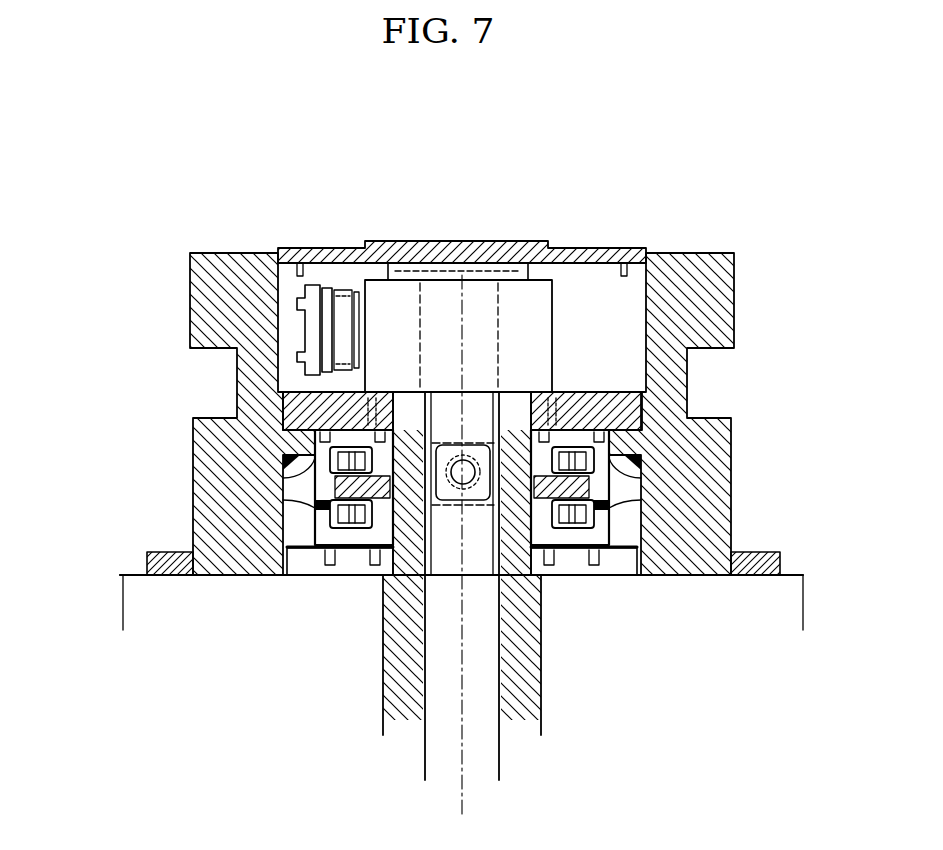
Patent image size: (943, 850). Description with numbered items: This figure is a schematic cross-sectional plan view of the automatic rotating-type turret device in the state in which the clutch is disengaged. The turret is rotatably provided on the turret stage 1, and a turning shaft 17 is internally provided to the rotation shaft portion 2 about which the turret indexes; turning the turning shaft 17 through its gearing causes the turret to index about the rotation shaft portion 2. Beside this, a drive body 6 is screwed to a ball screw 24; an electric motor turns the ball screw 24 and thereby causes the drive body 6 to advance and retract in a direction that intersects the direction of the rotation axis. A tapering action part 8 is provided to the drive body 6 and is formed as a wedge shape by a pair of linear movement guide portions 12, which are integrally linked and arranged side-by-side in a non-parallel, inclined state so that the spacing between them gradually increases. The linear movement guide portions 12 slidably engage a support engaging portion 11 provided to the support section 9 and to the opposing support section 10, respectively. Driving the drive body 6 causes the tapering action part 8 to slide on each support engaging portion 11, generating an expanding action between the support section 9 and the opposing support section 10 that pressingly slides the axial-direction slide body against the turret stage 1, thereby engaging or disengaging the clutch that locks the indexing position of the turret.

The turret stage 1 is at (148, 380).
The rotation shaft portion 2 is at (533, 667).
The drive body 6 is at (447, 498).
The tapering action part 8 is at (638, 462).
The support section 9 is at (315, 448).
The opposing support section 10 is at (318, 528).
The support engaging portion 11 is at (330, 508).
The linear movement guide portion 12 is at (373, 428).
The turning shaft 17 is at (502, 763).
The ball screw 24 is at (468, 468).